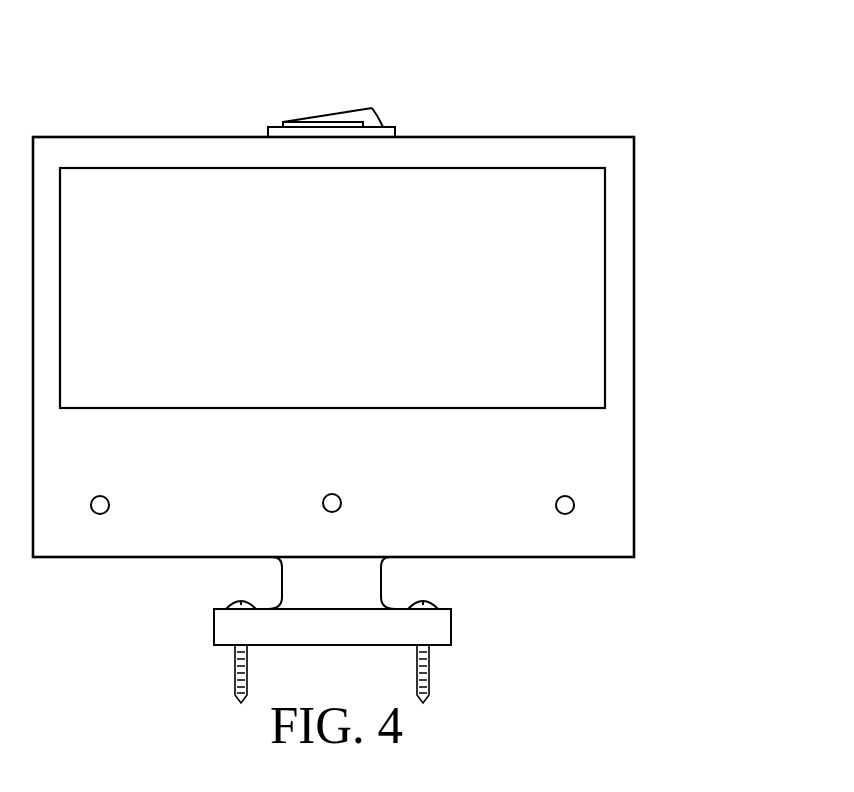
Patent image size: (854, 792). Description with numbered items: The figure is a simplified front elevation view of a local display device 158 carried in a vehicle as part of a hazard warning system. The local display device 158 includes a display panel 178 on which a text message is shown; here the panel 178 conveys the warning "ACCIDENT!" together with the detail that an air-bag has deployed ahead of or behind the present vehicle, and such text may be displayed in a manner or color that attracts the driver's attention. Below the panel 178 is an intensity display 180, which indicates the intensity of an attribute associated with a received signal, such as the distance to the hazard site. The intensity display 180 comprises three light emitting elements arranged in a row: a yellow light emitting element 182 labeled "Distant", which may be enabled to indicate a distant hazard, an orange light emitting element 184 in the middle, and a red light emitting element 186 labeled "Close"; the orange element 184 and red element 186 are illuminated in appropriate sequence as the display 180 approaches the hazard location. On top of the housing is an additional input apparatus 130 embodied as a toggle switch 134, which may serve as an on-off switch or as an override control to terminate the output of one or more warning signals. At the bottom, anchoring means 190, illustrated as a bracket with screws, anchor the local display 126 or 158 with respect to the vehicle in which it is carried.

The input apparatus 130 is at (263, 67).
The toggle switch 134 is at (372, 110).
The local display 126 is at (684, 183).
The local display device 158 is at (698, 245).
The display panel 178 is at (585, 338).
The intensity display 180 is at (705, 494).
The yellow light emitting element 182 is at (100, 514).
The orange light emitting element 184 is at (332, 512).
The red light emitting element 186 is at (565, 514).
The anchoring means 190 is at (503, 659).